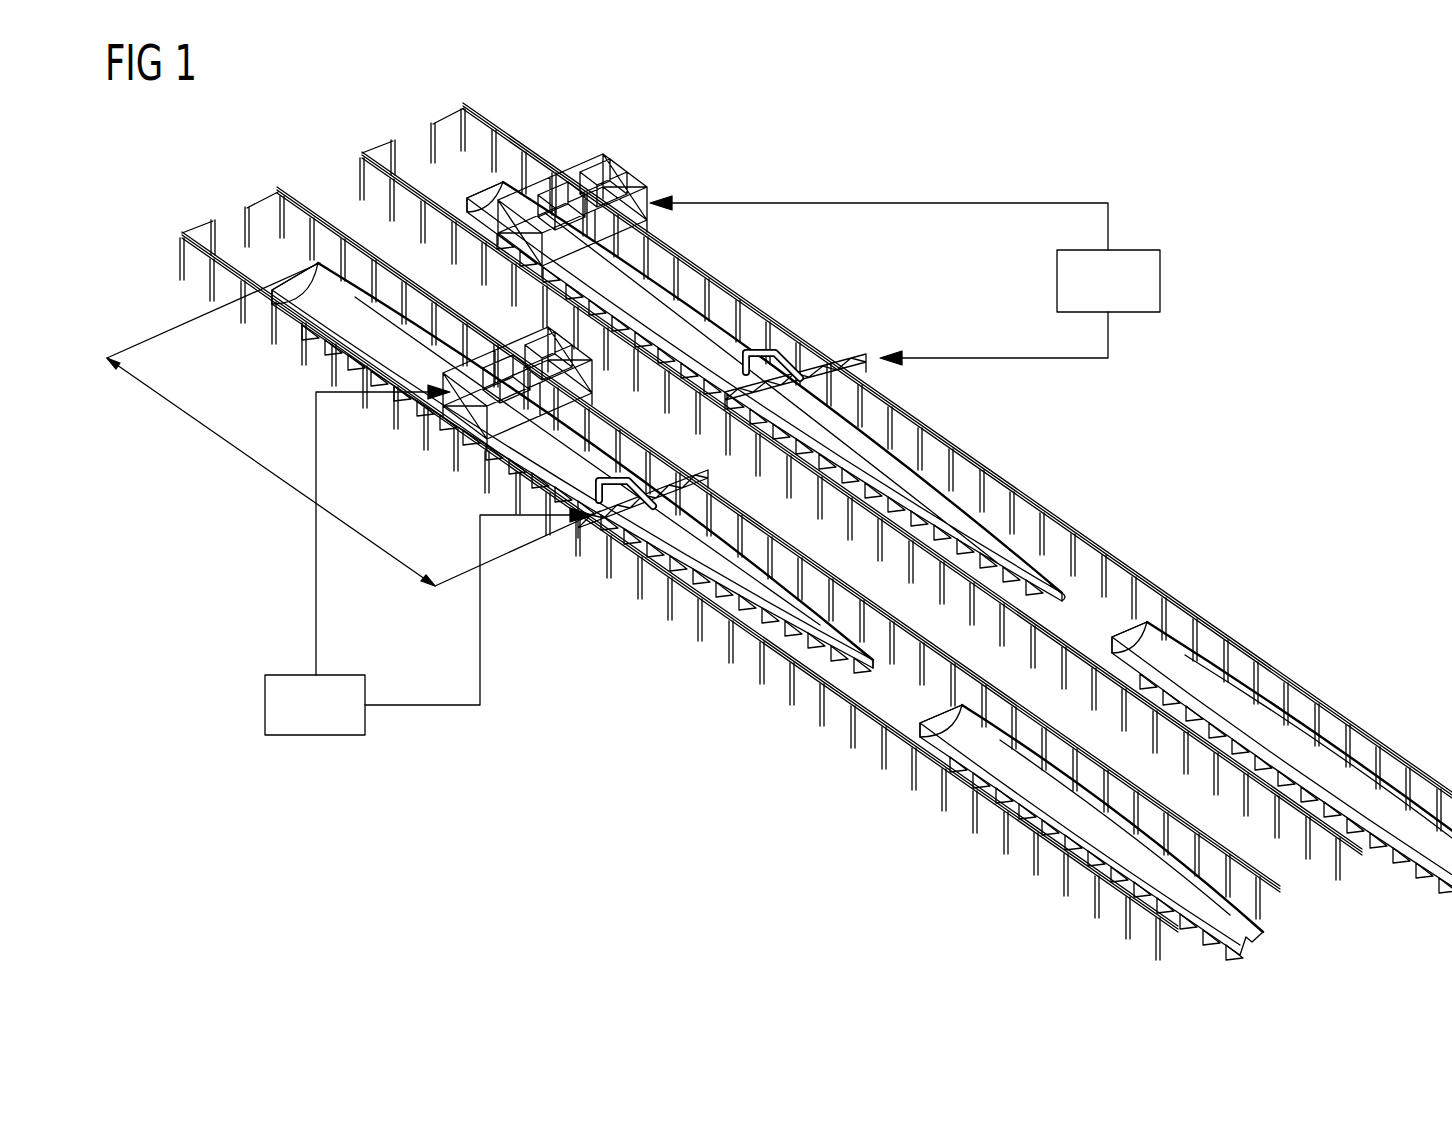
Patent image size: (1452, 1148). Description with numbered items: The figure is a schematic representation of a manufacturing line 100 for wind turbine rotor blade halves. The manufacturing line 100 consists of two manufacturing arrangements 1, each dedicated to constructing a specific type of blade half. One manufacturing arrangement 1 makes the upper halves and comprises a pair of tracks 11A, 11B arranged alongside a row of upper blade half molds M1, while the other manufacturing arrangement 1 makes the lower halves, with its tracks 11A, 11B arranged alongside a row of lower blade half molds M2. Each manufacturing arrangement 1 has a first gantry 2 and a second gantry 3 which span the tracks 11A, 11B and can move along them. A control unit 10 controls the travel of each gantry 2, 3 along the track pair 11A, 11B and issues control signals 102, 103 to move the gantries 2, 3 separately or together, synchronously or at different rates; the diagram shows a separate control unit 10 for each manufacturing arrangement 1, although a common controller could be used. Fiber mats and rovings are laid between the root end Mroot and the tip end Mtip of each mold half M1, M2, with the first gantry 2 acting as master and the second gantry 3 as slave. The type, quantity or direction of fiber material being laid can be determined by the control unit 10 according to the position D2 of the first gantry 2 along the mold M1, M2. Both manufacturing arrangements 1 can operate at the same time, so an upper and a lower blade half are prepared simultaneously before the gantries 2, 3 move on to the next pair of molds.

The manufacturing arrangement 1 is at (419, 104).
The track 11A is at (381, 150).
The track 11B is at (481, 100).
The first gantry 2 is at (860, 356).
The second gantry 3 is at (622, 192).
The control unit 10 is at (1162, 284).
The manufacturing line 100 is at (1087, 116).
The control signal 102 is at (1016, 366).
The control signal 103 is at (905, 203).
The upper blade half mold M1 is at (640, 545).
The lower blade half mold M2 is at (910, 468).
The root end Mroot is at (505, 182).
The tip end Mtip is at (1046, 584).
The position of the first gantry D2 is at (353, 424).